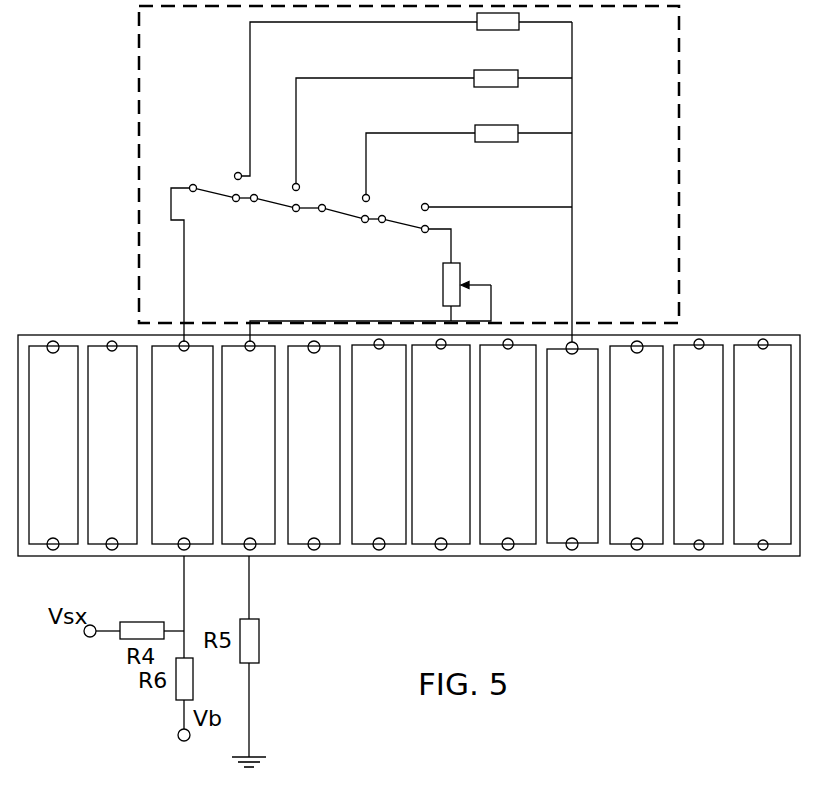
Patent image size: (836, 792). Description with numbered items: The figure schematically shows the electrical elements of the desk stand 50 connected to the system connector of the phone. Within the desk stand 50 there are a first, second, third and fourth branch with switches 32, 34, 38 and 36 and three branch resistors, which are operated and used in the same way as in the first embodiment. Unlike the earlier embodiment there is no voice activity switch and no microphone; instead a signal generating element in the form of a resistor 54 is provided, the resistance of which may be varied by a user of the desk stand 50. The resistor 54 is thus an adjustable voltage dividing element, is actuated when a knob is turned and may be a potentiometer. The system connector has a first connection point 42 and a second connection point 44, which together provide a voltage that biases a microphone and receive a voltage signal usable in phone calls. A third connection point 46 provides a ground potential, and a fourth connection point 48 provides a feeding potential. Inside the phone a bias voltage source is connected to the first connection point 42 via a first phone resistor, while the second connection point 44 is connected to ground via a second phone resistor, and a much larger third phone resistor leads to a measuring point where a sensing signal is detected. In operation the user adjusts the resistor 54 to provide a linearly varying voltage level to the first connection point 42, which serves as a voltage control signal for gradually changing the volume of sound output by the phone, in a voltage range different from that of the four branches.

The first branch switch 32 is at (386, 96).
The second branch switch 34 is at (417, 130).
The fourth branch switch 36 is at (451, 163).
The third branch switch 38 is at (481, 195).
The first connection point 42 is at (182, 499).
The second connection point 44 is at (248, 480).
The third connection point 46 is at (572, 446).
The fourth connection point 48 is at (762, 444).
The desk stand 50 is at (679, 195).
The resistor 54 is at (450, 292).